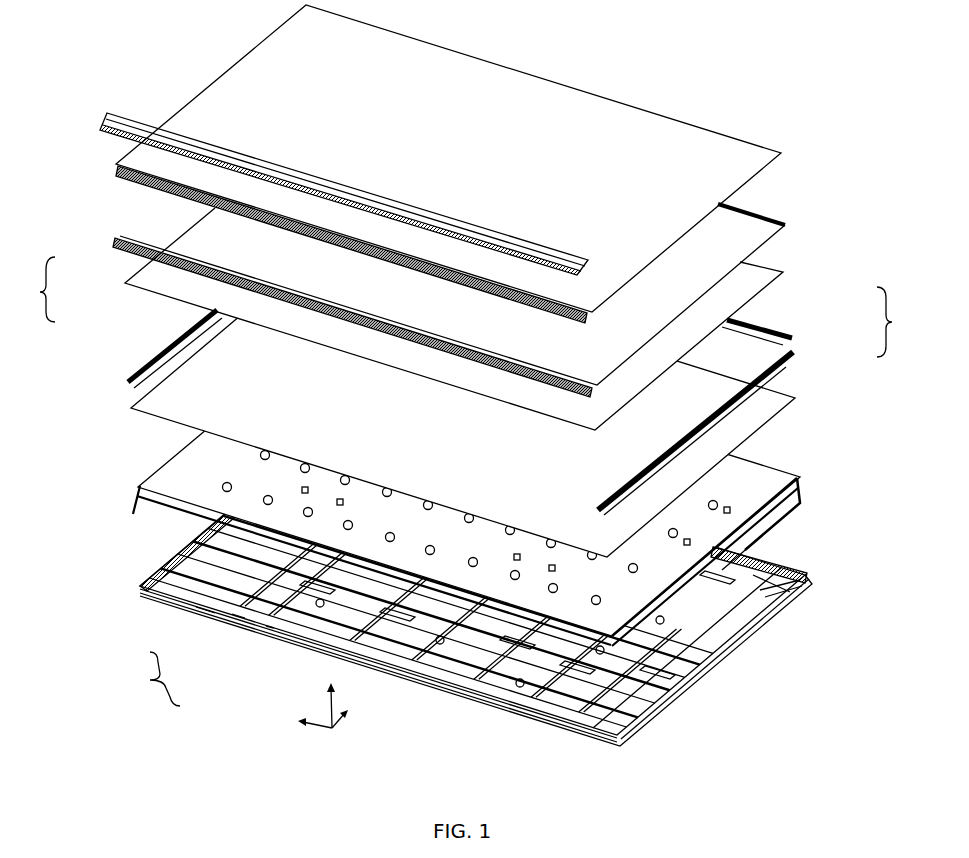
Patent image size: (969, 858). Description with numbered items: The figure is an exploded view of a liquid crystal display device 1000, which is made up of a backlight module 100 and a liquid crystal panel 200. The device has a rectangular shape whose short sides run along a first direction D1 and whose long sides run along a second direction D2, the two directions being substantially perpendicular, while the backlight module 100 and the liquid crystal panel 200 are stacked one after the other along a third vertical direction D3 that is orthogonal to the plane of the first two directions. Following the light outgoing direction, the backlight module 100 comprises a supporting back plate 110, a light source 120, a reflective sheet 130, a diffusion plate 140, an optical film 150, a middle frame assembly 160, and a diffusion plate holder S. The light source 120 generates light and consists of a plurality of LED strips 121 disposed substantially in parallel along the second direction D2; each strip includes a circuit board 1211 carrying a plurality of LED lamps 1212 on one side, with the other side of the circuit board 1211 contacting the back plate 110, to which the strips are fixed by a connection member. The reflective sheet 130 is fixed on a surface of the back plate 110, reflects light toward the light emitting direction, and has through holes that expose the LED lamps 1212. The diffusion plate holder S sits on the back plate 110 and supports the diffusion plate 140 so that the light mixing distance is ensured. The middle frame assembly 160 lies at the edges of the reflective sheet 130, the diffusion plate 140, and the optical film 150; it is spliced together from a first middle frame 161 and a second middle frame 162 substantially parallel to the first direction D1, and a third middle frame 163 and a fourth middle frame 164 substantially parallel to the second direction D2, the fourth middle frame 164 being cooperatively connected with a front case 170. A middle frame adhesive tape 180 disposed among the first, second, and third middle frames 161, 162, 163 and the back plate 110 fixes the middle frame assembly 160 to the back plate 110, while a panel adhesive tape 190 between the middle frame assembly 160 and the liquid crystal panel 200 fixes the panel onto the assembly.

The liquid crystal display device 1000 is at (558, 34).
The backlight module 100 is at (114, 485).
The liquid crystal panel 200 is at (705, 160).
The panel adhesive tape 190 is at (762, 208).
The front case 170 is at (110, 114).
The fourth middle frame 164 is at (118, 240).
The third middle frame 163 is at (758, 320).
The second middle frame 162 is at (785, 357).
The first middle frame 161 is at (152, 352).
The middle frame assembly 160 is at (466, 307).
The optical film 150 is at (765, 276).
The diffusion plate 140 is at (175, 414).
The reflective sheet 130 is at (748, 470).
The middle frame adhesive tape 180 is at (773, 532).
The light source 120 is at (776, 594).
The LED strips 121 is at (146, 679).
The circuit board 1211 is at (237, 618).
The LED lamps 1212 is at (205, 614).
The diffusion plate holder S is at (270, 628).
The back plate 110 is at (733, 647).
The first direction D1 is at (352, 714).
The second direction D2 is at (301, 725).
The third vertical direction D3 is at (331, 697).